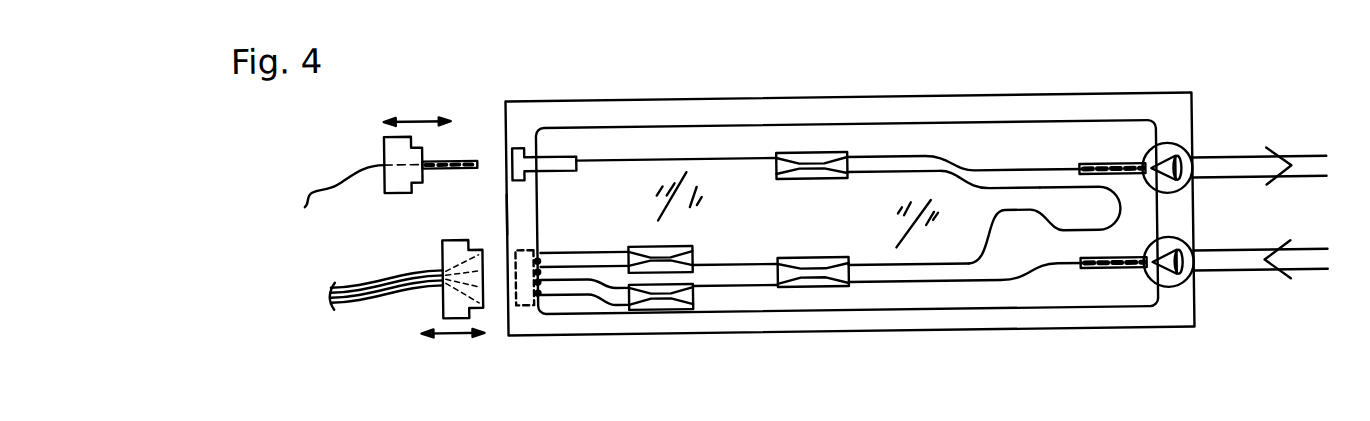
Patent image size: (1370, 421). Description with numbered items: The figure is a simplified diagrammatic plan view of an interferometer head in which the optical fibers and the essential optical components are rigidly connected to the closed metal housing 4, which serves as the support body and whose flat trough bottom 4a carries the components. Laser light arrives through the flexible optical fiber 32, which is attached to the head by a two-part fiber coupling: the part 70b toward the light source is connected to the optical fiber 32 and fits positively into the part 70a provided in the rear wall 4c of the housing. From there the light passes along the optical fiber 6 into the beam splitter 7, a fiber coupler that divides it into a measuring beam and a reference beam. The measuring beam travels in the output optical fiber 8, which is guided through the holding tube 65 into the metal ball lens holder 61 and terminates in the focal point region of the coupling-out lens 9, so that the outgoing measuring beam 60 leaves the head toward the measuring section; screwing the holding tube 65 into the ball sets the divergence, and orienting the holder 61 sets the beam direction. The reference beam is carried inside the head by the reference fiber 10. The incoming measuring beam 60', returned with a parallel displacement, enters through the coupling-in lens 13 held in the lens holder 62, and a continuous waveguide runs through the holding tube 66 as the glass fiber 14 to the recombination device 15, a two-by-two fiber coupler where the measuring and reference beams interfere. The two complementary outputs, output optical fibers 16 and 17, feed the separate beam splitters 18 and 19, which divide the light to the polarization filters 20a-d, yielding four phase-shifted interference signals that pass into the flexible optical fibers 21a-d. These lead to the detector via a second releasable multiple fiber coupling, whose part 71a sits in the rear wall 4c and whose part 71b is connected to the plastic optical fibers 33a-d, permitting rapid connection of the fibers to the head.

The housing 4 is at (703, 113).
The trough bottom 4a is at (717, 191).
The rear wall 4c is at (507, 203).
The optical fiber 6 is at (583, 158).
The beam splitter 7 is at (812, 150).
The output optical fiber 8 is at (915, 158).
The coupling-out lens 9 is at (1183, 165).
The reference fiber 10 is at (1027, 215).
The coupling-in lens 13 is at (1178, 277).
The glass fiber 14 is at (997, 283).
The recombination device 15 is at (815, 283).
The output optical fiber 16 is at (717, 265).
The output optical fiber 17 is at (745, 284).
The beam splitter 18 is at (655, 265).
The beam splitter 19 is at (673, 301).
The polarization filters 20a-d is at (547, 264).
The flexible optical fibers 21a-d is at (571, 297).
The optical fiber 32 is at (330, 180).
The plastic optical fibers 33a-d is at (343, 293).
The outgoing measuring beam 60 is at (1259, 112).
The incoming measuring beam 60' is at (1261, 303).
The lens holder 61 is at (1167, 151).
The lens holder 62 is at (1182, 284).
The holding tube 65 is at (1103, 168).
The holding tube 66 is at (1097, 268).
The fiber coupling part 70a is at (515, 146).
The fiber coupling part 70b is at (395, 152).
The multiple fiber coupling part 71a is at (527, 293).
The multiple fiber coupling part 71b is at (442, 299).